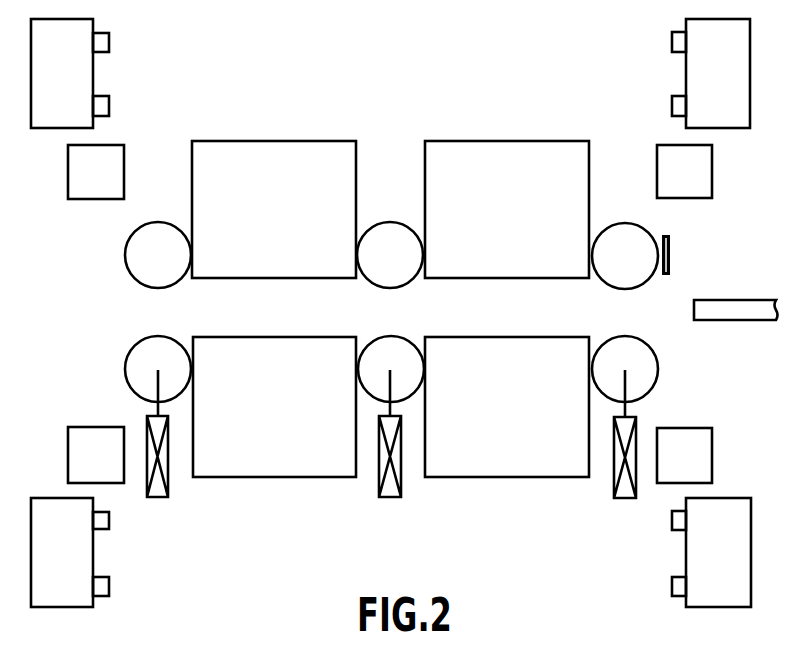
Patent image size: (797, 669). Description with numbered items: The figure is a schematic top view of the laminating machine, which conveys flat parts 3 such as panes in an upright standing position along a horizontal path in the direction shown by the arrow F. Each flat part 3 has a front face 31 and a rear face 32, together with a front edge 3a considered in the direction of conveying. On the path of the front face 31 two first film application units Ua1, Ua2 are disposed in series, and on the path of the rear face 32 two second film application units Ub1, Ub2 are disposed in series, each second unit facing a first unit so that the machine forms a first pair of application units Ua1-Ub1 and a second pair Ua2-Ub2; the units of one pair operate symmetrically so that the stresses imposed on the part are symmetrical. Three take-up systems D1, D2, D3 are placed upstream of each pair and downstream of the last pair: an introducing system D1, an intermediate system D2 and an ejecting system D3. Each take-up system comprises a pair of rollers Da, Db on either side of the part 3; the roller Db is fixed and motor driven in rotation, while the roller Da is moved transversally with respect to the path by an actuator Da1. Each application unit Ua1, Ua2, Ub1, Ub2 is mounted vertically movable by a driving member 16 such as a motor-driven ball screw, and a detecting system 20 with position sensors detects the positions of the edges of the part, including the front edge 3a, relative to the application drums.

The driving member 16 is at (68, 172).
The detecting system 20 is at (682, 247).
The flat part 3 is at (748, 312).
The front edge 3a is at (694, 320).
The front face 31 is at (723, 323).
The rear face 32 is at (724, 300).
The second film application unit Ub1 is at (526, 222).
The second film application unit Ub2 is at (291, 222).
The first film application unit Ua1 is at (526, 425).
The first film application unit Ua2 is at (291, 425).
The roller Db is at (151, 275).
The roller Da is at (163, 347).
The actuator Da1 is at (157, 498).
The introducing take-up system D1 is at (625, 209).
The intermediate take-up system D2 is at (390, 209).
The ejecting take-up system D3 is at (157, 209).
The arrow F is at (694, 310).